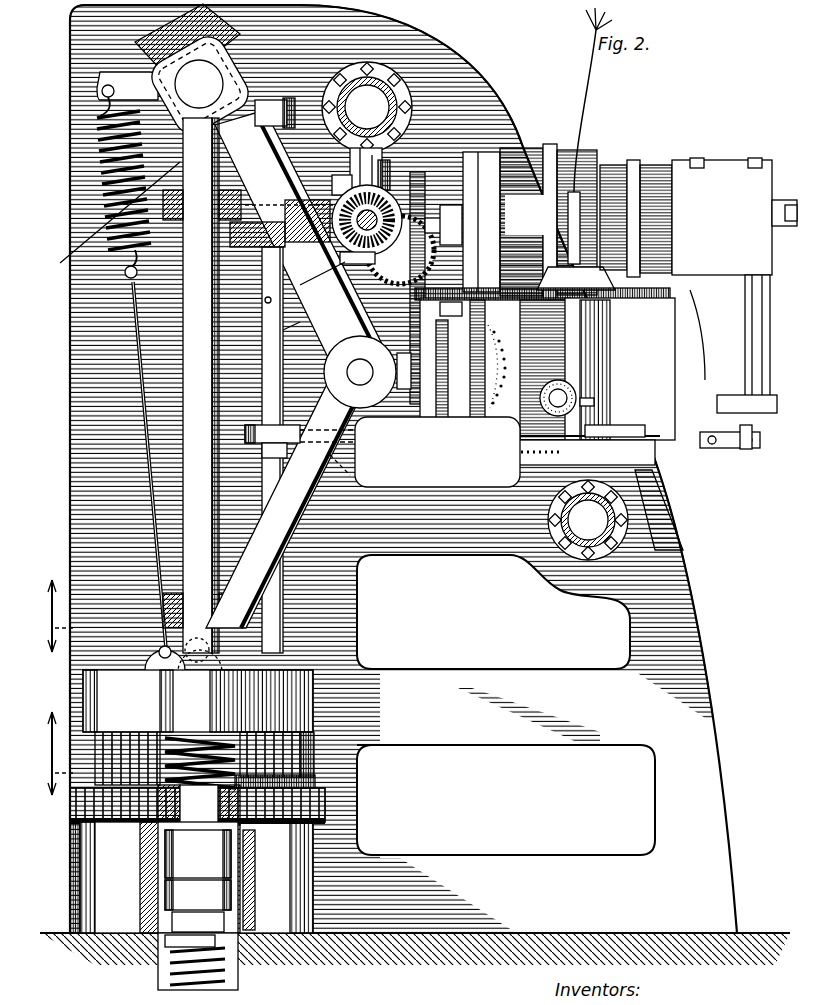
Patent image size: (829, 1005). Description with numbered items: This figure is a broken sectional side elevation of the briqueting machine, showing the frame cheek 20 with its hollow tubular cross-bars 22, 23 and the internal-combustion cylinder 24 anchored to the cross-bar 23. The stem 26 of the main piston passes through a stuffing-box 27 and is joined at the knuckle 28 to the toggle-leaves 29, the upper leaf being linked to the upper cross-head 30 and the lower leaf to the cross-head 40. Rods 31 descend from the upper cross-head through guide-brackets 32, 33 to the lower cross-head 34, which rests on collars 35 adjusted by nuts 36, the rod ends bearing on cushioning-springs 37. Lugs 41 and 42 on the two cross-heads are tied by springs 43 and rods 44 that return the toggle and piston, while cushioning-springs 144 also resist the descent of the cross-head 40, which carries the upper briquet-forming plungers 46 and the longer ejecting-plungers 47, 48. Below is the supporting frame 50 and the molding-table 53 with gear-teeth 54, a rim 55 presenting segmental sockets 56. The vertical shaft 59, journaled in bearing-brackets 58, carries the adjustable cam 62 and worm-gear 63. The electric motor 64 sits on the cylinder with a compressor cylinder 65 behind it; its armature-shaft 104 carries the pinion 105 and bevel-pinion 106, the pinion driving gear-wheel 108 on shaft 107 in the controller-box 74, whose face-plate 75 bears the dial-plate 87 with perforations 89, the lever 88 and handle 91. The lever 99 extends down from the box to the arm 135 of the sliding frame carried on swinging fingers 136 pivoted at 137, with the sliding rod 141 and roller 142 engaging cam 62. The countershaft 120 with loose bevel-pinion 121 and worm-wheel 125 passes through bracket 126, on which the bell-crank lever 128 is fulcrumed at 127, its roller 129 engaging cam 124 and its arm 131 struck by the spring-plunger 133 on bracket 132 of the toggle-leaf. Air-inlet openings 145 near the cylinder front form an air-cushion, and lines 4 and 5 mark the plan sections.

The side or cheek 20 is at (415, 475).
The tubular brace or cross-bar 22 is at (392, 82).
The tubular brace or cross-bar 23 is at (588, 520).
The internal-combustion cylinder 24 is at (470, 445).
The piston stem 26 is at (405, 390).
The stuffing-box 27 is at (432, 355).
The knuckle or joint 28 is at (360, 372).
The toggle-leaf 29 is at (289, 458).
The upper cross-head 30 is at (195, 72).
The rod 31 is at (201, 385).
The guide-bracket 32 is at (202, 409).
The guide-bracket 33 is at (199, 805).
The lower cross-head 34 is at (198, 877).
The collar 35 is at (198, 906).
The nut 36 is at (225, 945).
The cushioning-spring 37 is at (225, 970).
The cross-head 40 is at (198, 701).
The perforated lug 41 is at (127, 94).
The perforated lug 42 is at (147, 657).
The spring 43 is at (105, 200).
The rod 44 is at (148, 462).
The upper briquet-forming plunger 46 is at (232, 740).
The ejecting-plunger 47 is at (280, 760).
The ejecting-plunger 48 is at (118, 760).
The supporting frame 50 is at (148, 898).
The molding-table 53 is at (360, 805).
The gear-teeth 54 is at (80, 818).
The rim 55 is at (78, 792).
The segmental socket 56 is at (360, 780).
The bearing-bracket 58 is at (275, 113).
The vertical shaft 59 is at (283, 615).
The adjustable cam 62 is at (258, 443).
The worm-gear 63 is at (250, 248).
The electric motor 64 is at (539, 154).
The compressor cylinder 65 is at (720, 335).
The controller-box 74 is at (512, 367).
The removable cover or face-plate 75 is at (620, 369).
The dial-plate 87 is at (548, 380).
The lever 88 is at (594, 402).
The perforation 89 is at (572, 385).
The handle 91 is at (530, 436).
The lever 99 is at (580, 456).
The armature-shaft 104 is at (438, 218).
The pinion 105 is at (450, 205).
The bevel-pinion 106 is at (400, 258).
The shaft 107 is at (520, 300).
The gear-wheel 108 is at (430, 262).
The countershaft 120 is at (372, 215).
The bevel-pinion 121 is at (300, 241).
The cam 124 is at (330, 193).
The worm-wheel 125 is at (328, 260).
The bracket 126 is at (367, 107).
The fulcrum 127 is at (338, 178).
The bell-crank lever 128 is at (350, 165).
The roller 129 is at (395, 160).
The arm 131 is at (317, 275).
The bracket 132 is at (268, 300).
The spring-plunger 133 is at (286, 335).
The arm 135 is at (652, 470).
The swinging finger 136 is at (760, 440).
The pivot 137 is at (742, 449).
The longitudinally-sliding rod 141 is at (378, 430).
The roller 142 is at (336, 473).
The cushioning-spring 144 is at (310, 740).
The air-inlet opening 145 is at (495, 372).
The section line 4 is at (50, 616).
The section line 5 is at (49, 753).